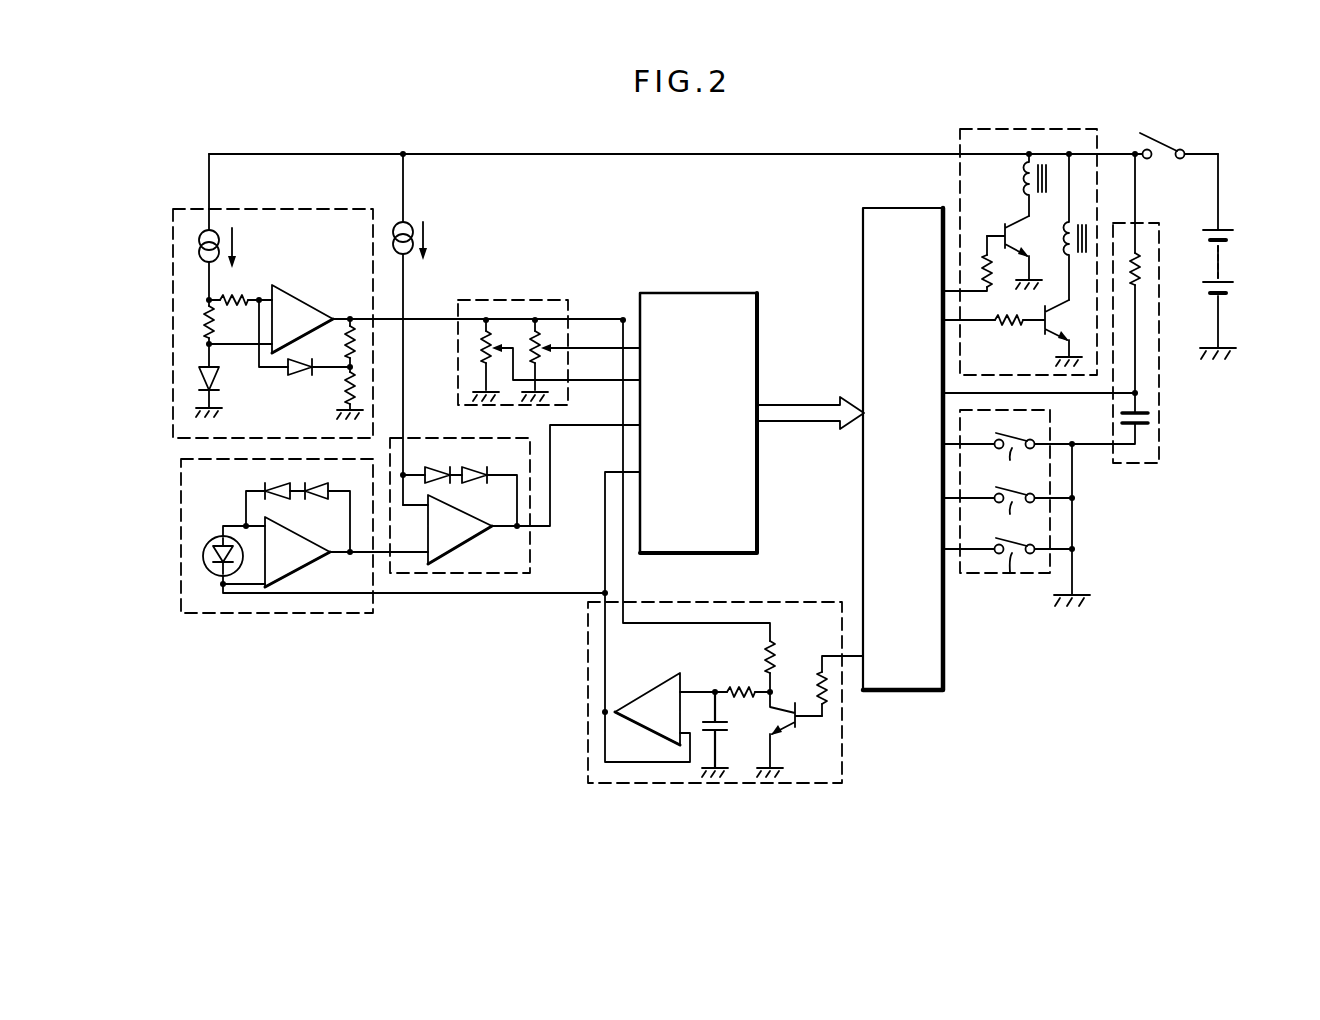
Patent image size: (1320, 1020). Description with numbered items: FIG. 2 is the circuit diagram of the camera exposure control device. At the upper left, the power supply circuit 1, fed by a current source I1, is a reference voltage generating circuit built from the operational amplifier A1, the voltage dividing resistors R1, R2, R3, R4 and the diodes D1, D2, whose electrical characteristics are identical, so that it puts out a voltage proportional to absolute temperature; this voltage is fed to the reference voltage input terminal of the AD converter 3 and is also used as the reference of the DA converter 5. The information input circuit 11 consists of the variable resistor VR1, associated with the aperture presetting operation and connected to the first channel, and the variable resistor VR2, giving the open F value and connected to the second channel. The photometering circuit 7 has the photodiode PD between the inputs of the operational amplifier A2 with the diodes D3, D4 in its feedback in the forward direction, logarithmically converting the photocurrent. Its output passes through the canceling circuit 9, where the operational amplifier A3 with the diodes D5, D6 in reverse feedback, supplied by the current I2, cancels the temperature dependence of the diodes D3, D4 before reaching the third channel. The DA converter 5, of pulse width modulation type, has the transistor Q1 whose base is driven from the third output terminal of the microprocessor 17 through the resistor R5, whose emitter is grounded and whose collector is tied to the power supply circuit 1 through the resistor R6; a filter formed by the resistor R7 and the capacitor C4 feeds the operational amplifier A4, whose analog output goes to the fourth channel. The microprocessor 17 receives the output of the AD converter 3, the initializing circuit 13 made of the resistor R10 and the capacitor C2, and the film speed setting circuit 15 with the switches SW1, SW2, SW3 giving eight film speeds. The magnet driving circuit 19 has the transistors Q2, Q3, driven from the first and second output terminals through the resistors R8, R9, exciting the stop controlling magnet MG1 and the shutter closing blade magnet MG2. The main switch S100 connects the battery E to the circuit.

The power supply circuit 1 is at (186, 208).
The AD converter 3 is at (705, 293).
The DA converter 5 is at (843, 742).
The photometering circuit 7 is at (293, 613).
The canceling circuit 9 is at (411, 437).
The information input circuit 11 is at (520, 300).
The initializing circuit 13 is at (1160, 300).
The film speed setting circuit 15 is at (1036, 574).
The microprocessor 17 is at (893, 208).
The magnet driving circuit 19 is at (1036, 128).
The current source I1 is at (233, 248).
The current flowing into the canceling circuit I2 is at (424, 244).
The voltage dividing resistor R1 is at (204, 327).
The voltage dividing resistor R2 is at (238, 297).
The voltage dividing resistor R3 is at (353, 318).
The voltage dividing resistor R4 is at (345, 396).
The resistor R5 is at (830, 690).
The resistor R6 is at (774, 660).
The resistor R7 is at (740, 688).
The resistor R8 is at (980, 268).
The resistor R9 is at (1000, 331).
The resistor R10 is at (1140, 262).
The diode D1 is at (204, 378).
The diode D2 is at (300, 379).
The diode D3 is at (278, 490).
The diode D4 is at (321, 490).
The diode D5 is at (440, 467).
The diode D6 is at (480, 467).
The operational amplifier A1 is at (302, 319).
The operational amplifier A2 is at (297, 552).
The operational amplifier A3 is at (460, 529).
The operational amplifier A4 is at (647, 709).
The photodiode PD is at (212, 542).
The variable resistor VR1 is at (541, 342).
The variable resistor VR2 is at (482, 342).
The capacitor C2 is at (1150, 419).
The capacitor C4 is at (732, 724).
The transistor Q1 is at (800, 730).
The transistor Q2 is at (1018, 252).
The transistor Q3 is at (1048, 333).
The stop controlling magnet MG1 is at (1023, 183).
The magnet for controlling closing blades of shutter MG2 is at (1063, 243).
The switch SW1 is at (1007, 462).
The switch SW2 is at (1007, 516).
The switch SW3 is at (1007, 576).
The main switch S100 is at (1160, 138).
The battery E is at (1222, 268).